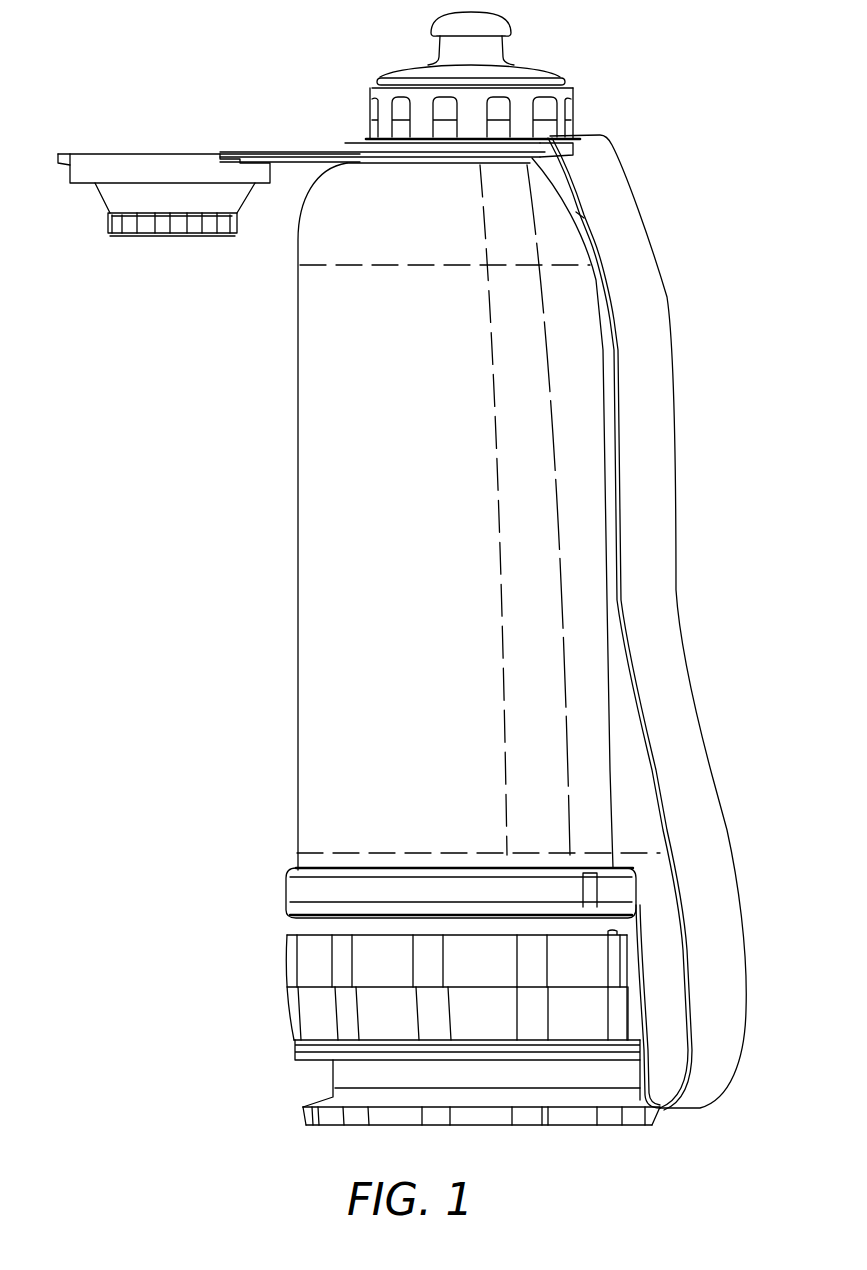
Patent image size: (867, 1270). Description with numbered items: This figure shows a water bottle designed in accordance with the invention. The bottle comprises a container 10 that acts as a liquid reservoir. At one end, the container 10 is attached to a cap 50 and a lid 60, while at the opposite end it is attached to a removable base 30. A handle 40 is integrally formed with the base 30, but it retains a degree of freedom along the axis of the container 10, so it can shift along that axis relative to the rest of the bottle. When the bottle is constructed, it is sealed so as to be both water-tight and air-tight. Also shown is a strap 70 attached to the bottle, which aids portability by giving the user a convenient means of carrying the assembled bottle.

The container 10 is at (296, 588).
The removable base 30 is at (286, 944).
The handle 40 is at (298, 1102).
The cap 50 is at (551, 72).
The lid 60 is at (100, 240).
The strap 70 is at (668, 288).